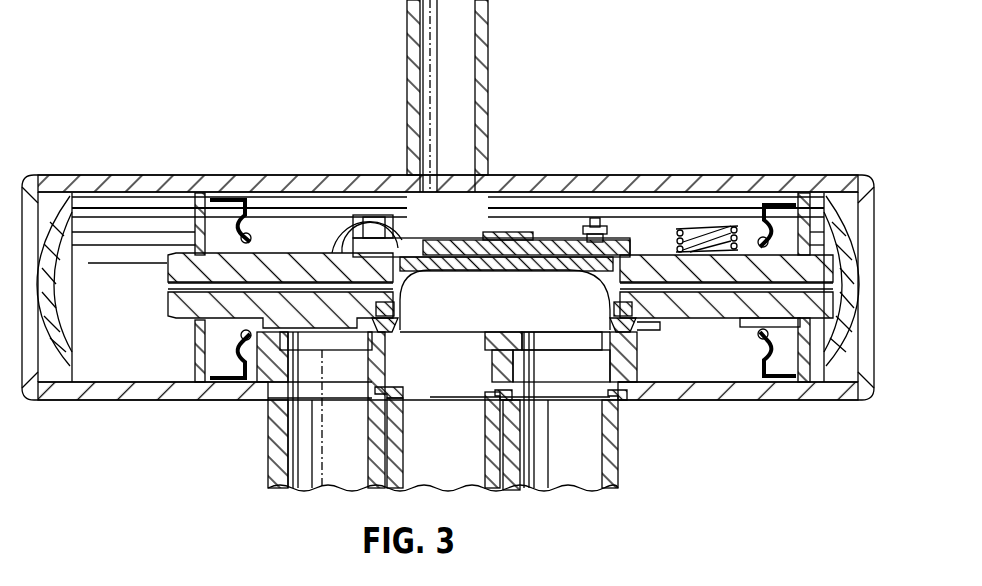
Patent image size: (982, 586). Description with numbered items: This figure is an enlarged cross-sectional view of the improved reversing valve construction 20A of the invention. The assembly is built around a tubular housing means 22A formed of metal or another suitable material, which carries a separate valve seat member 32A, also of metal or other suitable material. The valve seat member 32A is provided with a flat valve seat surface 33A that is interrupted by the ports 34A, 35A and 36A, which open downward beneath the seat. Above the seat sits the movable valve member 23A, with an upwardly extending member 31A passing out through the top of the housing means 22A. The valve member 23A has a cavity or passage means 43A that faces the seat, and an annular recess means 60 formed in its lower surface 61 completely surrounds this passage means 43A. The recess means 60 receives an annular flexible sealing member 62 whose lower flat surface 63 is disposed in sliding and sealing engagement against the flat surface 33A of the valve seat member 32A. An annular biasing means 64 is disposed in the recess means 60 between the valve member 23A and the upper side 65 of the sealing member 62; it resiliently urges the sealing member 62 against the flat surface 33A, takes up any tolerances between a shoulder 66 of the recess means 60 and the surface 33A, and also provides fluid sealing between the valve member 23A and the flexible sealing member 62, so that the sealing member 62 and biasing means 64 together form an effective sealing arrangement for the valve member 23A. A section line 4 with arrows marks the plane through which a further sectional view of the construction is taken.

The reversing valve construction 20A is at (752, 78).
The tubular housing means 22A is at (158, 112).
The movable valve member 23A is at (305, 253).
The push rod shaft 31A is at (530, 177).
The valve seat member 32A is at (263, 368).
The flat valve seat surface 33A is at (500, 330).
The port 34A is at (330, 343).
The port 35A is at (457, 345).
The port 36A is at (577, 343).
The cavity or passage means 43A is at (560, 277).
The annular recess means 60 is at (637, 340).
The lower surface 61 is at (643, 324).
The annular flexible sealing member 62 is at (623, 345).
The lower flat surface 63 is at (387, 342).
The annular biasing means 64 is at (614, 310).
The upper side 65 is at (395, 312).
The shoulder 66 is at (642, 322).
The section line 4- 4 is at (505, 125).